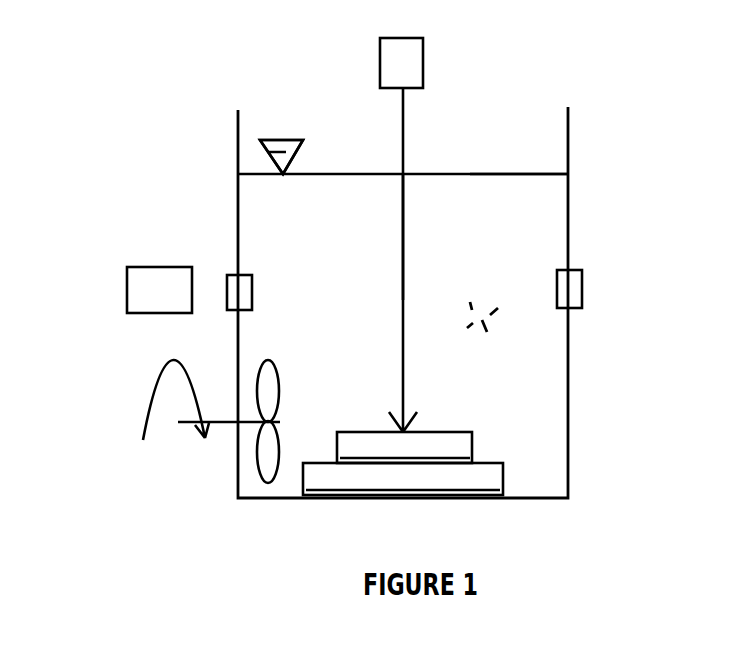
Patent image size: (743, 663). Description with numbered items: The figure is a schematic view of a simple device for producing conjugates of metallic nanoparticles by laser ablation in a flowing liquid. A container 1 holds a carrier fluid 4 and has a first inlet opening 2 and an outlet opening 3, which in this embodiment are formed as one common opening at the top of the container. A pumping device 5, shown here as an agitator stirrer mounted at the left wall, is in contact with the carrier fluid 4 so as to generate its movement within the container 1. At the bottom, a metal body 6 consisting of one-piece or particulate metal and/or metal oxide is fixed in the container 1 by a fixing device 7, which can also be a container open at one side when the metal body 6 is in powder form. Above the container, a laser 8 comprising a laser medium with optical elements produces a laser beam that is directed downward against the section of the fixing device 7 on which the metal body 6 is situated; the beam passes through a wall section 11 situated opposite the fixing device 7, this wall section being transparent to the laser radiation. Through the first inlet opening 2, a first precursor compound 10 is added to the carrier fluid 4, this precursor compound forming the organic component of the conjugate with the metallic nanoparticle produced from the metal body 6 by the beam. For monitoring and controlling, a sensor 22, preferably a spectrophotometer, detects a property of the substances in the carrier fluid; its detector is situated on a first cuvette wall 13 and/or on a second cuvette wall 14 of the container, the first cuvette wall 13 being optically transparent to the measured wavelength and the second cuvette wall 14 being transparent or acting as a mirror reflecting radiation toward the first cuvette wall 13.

The container 1 is at (568, 215).
The first inlet opening 2 is at (297, 118).
The outlet opening 3 is at (281, 157).
The carrier fluid 4 is at (510, 174).
The pumping device 5 is at (257, 370).
The metal body 6 is at (475, 443).
The fixing device 7 is at (503, 478).
The laser 8 is at (401, 235).
The first precursor compound 10 is at (498, 319).
The wall section 11 is at (403, 174).
The first cuvette wall 13 is at (228, 273).
The second cuvette wall 14 is at (582, 275).
The sensor 22 is at (159, 289).